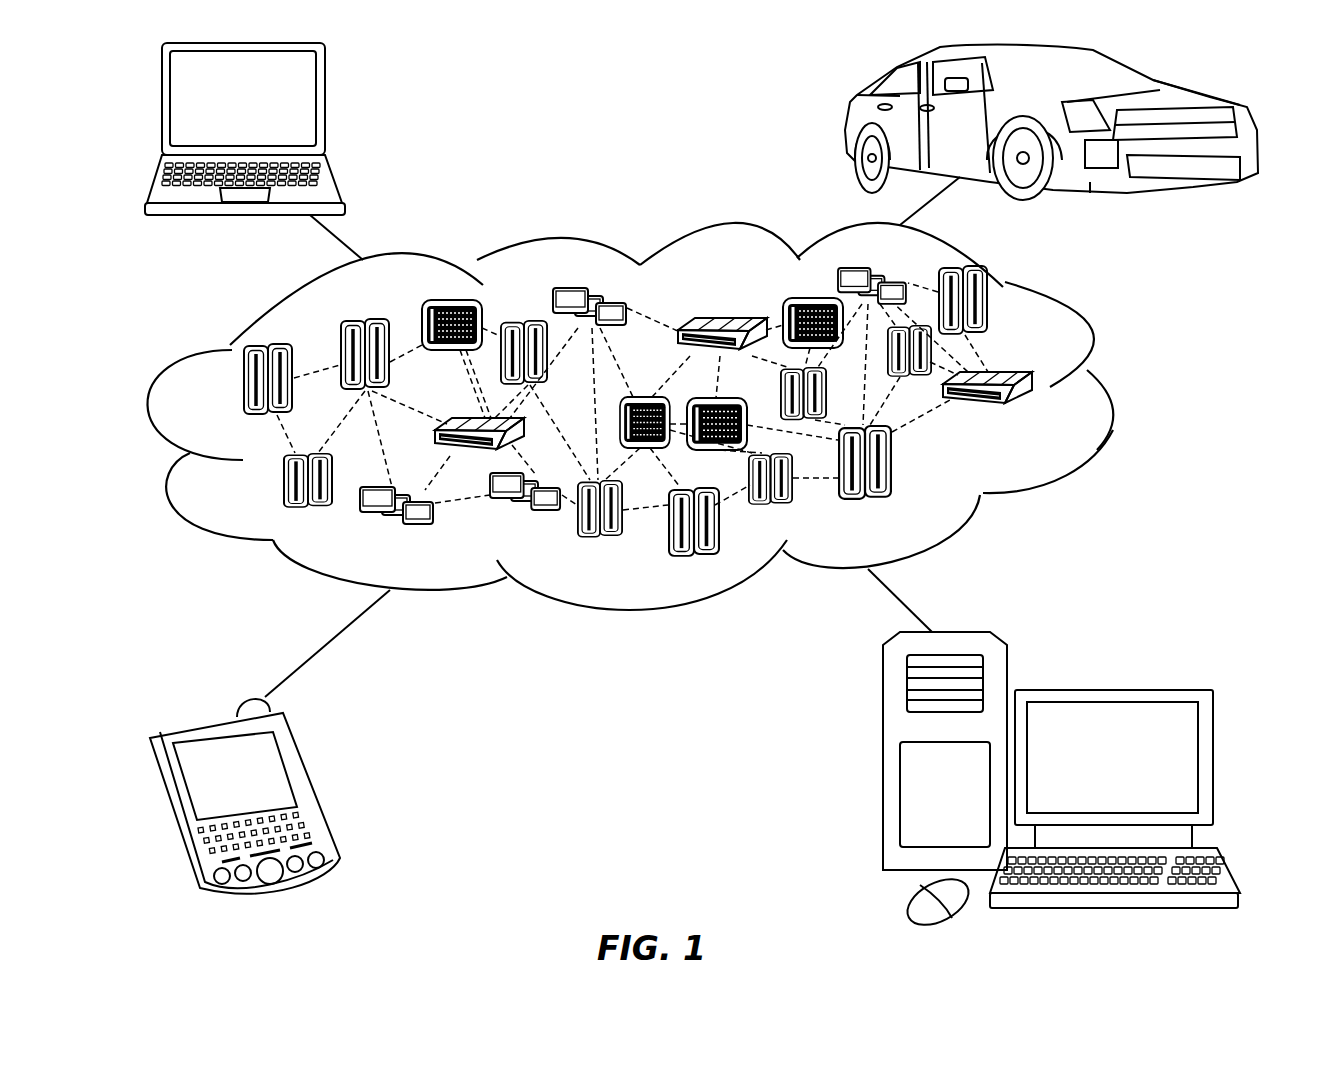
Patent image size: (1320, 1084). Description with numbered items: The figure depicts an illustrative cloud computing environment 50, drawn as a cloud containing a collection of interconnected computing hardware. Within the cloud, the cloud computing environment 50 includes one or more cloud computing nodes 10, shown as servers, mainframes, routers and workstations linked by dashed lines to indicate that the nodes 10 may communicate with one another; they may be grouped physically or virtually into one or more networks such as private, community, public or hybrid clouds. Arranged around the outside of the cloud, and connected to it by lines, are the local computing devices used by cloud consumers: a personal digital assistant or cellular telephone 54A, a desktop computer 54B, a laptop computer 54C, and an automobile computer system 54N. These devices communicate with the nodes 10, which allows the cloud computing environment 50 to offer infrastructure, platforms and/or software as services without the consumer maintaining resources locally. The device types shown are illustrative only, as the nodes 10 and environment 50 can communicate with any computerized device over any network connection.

The cloud computing node 10 is at (1054, 426).
The cloud computing environment 50 is at (1108, 390).
The personal digital assistant or cellular telephone 54A is at (311, 788).
The desktop computer 54B is at (1110, 688).
The laptop computer 54C is at (329, 106).
The automobile computer system 54N is at (850, 121).